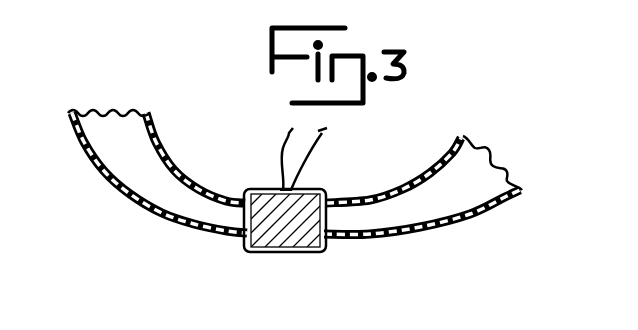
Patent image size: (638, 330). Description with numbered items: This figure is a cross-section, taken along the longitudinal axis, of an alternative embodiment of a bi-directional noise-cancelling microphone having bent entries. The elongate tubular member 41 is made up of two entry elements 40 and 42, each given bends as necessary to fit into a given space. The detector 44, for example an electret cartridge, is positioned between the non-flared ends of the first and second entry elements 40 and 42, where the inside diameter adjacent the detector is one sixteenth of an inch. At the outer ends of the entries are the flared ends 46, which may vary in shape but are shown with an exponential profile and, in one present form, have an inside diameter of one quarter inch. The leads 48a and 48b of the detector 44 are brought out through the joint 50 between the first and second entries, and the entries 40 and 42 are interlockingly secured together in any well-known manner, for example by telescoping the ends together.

The entry element 40 is at (443, 228).
The elongate tubular member 41 is at (360, 248).
The entry element 42 is at (150, 214).
The detector 44 is at (288, 242).
The flared ends 46 is at (113, 103).
The lead 48a is at (281, 143).
The lead 48b is at (316, 149).
The joint 50 is at (277, 188).